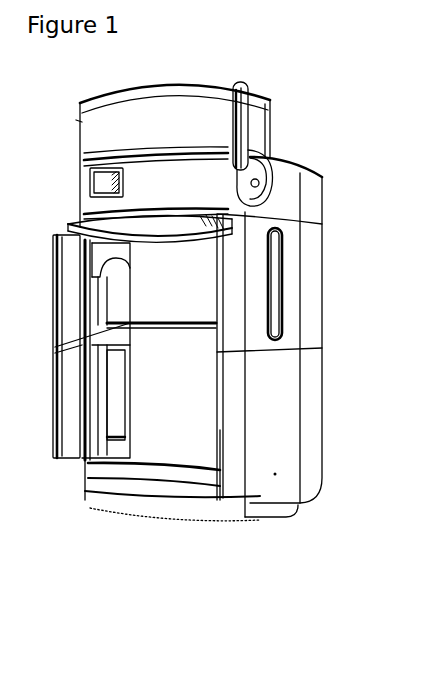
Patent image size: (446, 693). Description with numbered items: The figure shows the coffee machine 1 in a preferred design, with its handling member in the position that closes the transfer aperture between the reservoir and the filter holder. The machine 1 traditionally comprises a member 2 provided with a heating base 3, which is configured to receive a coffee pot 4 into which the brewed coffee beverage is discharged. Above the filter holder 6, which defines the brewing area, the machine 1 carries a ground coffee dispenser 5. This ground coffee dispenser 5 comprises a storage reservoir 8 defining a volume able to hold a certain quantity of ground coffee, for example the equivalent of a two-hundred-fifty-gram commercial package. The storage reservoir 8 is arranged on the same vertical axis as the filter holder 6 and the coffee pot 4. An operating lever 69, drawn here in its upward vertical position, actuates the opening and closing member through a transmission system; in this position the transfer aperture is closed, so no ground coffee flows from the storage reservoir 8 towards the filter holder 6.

The coffee machine 1 is at (368, 92).
The member 2 is at (312, 387).
The heating base 3 is at (78, 496).
The coffee pot 4 is at (182, 457).
The ground coffee dispenser 5 is at (68, 125).
The filter holder 6 is at (173, 293).
The storage reservoir 8 is at (90, 135).
The operating lever 69 is at (238, 140).